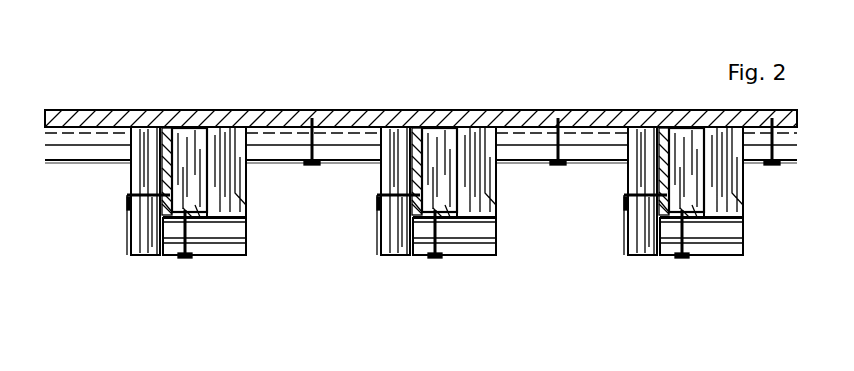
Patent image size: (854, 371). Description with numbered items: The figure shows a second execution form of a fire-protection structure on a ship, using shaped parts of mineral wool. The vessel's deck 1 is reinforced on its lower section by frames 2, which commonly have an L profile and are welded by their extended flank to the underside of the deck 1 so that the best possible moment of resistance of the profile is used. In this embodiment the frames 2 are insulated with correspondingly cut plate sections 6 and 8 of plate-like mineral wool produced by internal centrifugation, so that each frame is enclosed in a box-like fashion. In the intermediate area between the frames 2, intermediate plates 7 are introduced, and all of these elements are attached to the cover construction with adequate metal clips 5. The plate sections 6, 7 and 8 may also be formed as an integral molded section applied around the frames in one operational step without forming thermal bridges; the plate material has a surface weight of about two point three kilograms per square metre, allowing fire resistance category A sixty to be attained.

The vessel's deck 1 is at (377, 120).
The frames 2 is at (659, 222).
The metal clips 5 is at (778, 164).
The plate section 6 is at (246, 205).
The intermediate plates 7 is at (772, 175).
The plate section 8 is at (715, 243).